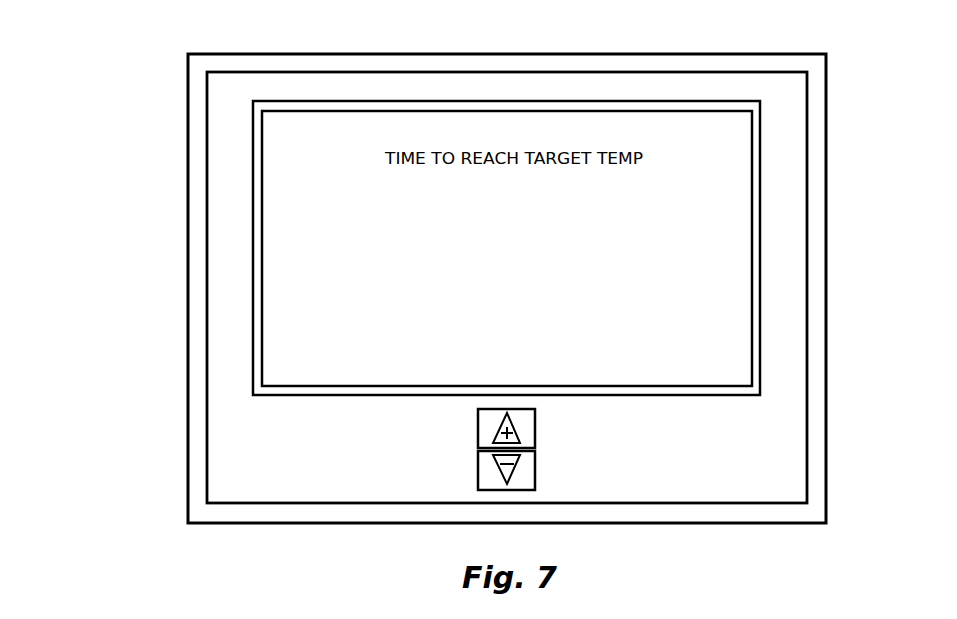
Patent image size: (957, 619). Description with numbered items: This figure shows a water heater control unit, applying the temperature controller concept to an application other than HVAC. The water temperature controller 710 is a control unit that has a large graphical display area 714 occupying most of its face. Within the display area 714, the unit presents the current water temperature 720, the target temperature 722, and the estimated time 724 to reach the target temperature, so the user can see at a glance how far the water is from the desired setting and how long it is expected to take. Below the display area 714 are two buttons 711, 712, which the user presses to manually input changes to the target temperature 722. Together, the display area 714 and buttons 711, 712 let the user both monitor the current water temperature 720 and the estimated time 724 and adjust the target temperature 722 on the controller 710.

The water temperature controller 710 is at (141, 47).
The button 711 is at (525, 424).
The button 712 is at (487, 475).
The graphical display area 714 is at (662, 369).
The current water temperature 720 is at (375, 371).
The target temperature 722 is at (714, 322).
The estimated time to reach the target temperature 724 is at (453, 187).